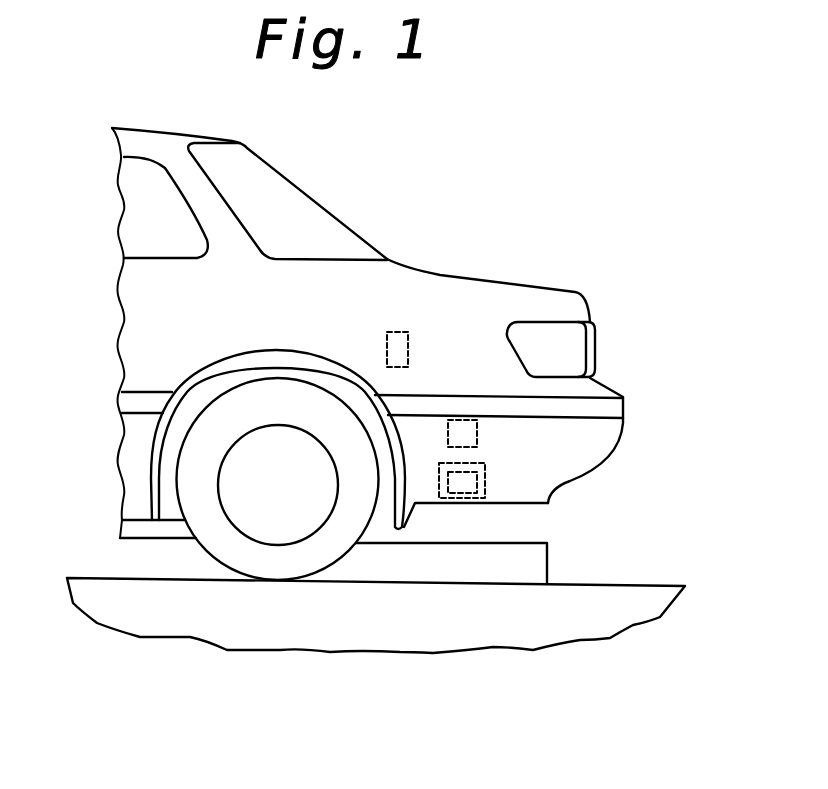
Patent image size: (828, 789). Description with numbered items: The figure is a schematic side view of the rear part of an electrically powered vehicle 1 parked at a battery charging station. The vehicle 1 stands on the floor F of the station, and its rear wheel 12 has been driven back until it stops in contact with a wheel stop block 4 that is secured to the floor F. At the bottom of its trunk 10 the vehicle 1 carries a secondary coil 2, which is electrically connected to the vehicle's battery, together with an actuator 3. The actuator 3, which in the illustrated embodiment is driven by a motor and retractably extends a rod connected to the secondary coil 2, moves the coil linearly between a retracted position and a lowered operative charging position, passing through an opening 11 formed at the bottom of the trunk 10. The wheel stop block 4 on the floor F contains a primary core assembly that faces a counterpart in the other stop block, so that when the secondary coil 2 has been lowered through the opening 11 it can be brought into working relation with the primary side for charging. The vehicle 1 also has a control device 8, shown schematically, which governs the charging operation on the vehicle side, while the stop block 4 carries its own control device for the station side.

The electrically powered vehicle 1 is at (456, 267).
The secondary coil 2 is at (484, 487).
The actuator 3 is at (470, 433).
The wheel stop block 4 is at (490, 563).
The control device 8 is at (402, 331).
The trunk 10 is at (485, 308).
The opening 11 is at (463, 507).
The rear wheel 12 is at (248, 560).
The floor F is at (90, 583).